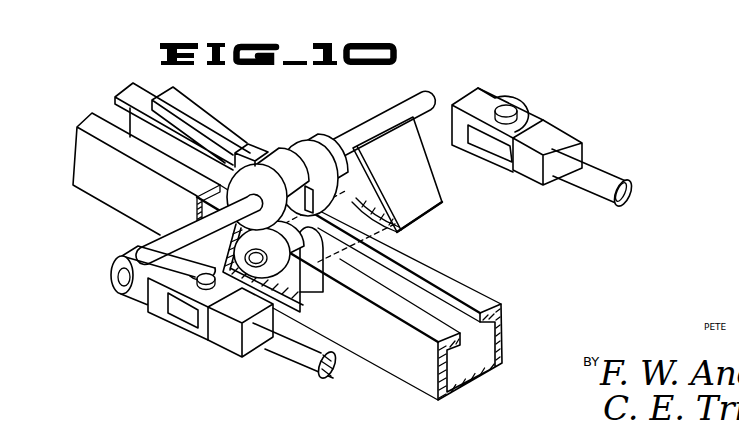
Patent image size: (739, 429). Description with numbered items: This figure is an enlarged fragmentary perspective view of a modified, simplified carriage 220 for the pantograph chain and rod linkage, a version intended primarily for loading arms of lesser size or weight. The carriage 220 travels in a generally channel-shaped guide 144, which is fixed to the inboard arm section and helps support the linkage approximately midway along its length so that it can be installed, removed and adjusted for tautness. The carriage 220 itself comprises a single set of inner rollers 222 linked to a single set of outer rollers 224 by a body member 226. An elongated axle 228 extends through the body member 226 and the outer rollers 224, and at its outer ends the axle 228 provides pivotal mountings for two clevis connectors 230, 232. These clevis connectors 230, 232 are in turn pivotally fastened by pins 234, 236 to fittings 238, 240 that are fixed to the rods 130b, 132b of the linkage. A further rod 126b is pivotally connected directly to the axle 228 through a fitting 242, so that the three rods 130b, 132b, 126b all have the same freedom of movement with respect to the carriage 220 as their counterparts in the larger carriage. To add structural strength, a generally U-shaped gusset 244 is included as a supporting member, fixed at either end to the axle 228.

The carriage 220 is at (130, 315).
The inner rollers 222 is at (327, 250).
The outer rollers 224 is at (320, 143).
The body member 226 is at (325, 200).
The axle 228 is at (397, 112).
The clevis connector 230 is at (455, 85).
The clevis connector 232 is at (138, 255).
The pin 234 is at (502, 106).
The pin 236 is at (205, 284).
The fitting 238 is at (553, 130).
The fitting 240 is at (235, 347).
The fitting 242 is at (250, 148).
The gusset 244 is at (417, 167).
The rod 126b is at (178, 92).
The rod 130b is at (610, 170).
The rod 132b is at (303, 360).
The guide 144 is at (477, 290).